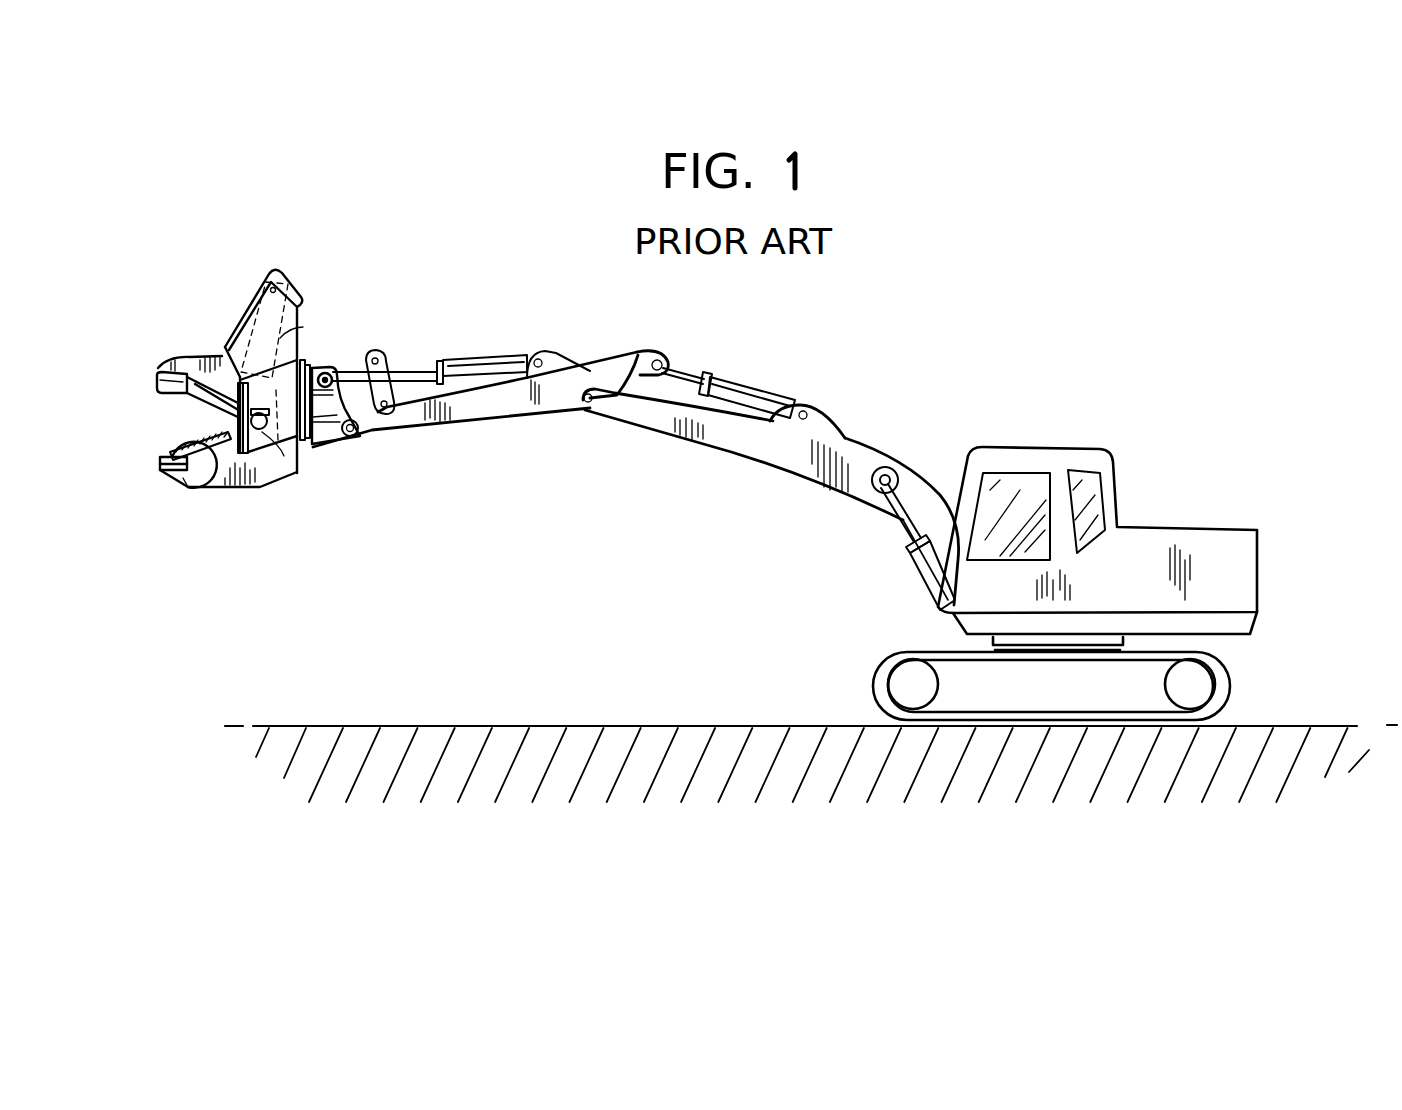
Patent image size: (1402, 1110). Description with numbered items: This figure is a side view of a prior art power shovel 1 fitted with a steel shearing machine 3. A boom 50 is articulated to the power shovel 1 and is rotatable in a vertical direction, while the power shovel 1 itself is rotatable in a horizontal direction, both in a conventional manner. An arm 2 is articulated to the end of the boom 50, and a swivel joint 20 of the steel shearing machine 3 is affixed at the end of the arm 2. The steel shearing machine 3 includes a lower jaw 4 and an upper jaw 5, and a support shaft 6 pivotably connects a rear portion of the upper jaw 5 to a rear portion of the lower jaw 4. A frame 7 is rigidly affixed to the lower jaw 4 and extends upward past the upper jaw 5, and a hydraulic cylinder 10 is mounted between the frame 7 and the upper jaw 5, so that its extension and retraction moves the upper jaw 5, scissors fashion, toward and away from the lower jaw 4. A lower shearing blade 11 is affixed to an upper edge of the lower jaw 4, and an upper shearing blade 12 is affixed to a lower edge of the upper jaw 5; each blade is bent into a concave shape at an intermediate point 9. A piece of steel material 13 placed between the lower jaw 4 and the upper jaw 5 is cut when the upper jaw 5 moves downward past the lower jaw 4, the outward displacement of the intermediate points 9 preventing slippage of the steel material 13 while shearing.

The power shovel 1 is at (1119, 345).
The arm 2 is at (500, 405).
The steel shearing machine 3 is at (219, 366).
The lower jaw 4 is at (262, 478).
The upper jaw 5 is at (196, 362).
The support shaft 6 is at (264, 428).
The frame 7 is at (307, 328).
The intermediate point 9 is at (160, 399).
The hydraulic cylinder 10 is at (303, 304).
The lower shearing blade 11 is at (156, 539).
The upper shearing blade 12 is at (155, 371).
The steel material 13 is at (173, 435).
The swivel joint 20 is at (340, 443).
The boom 50 is at (802, 462).